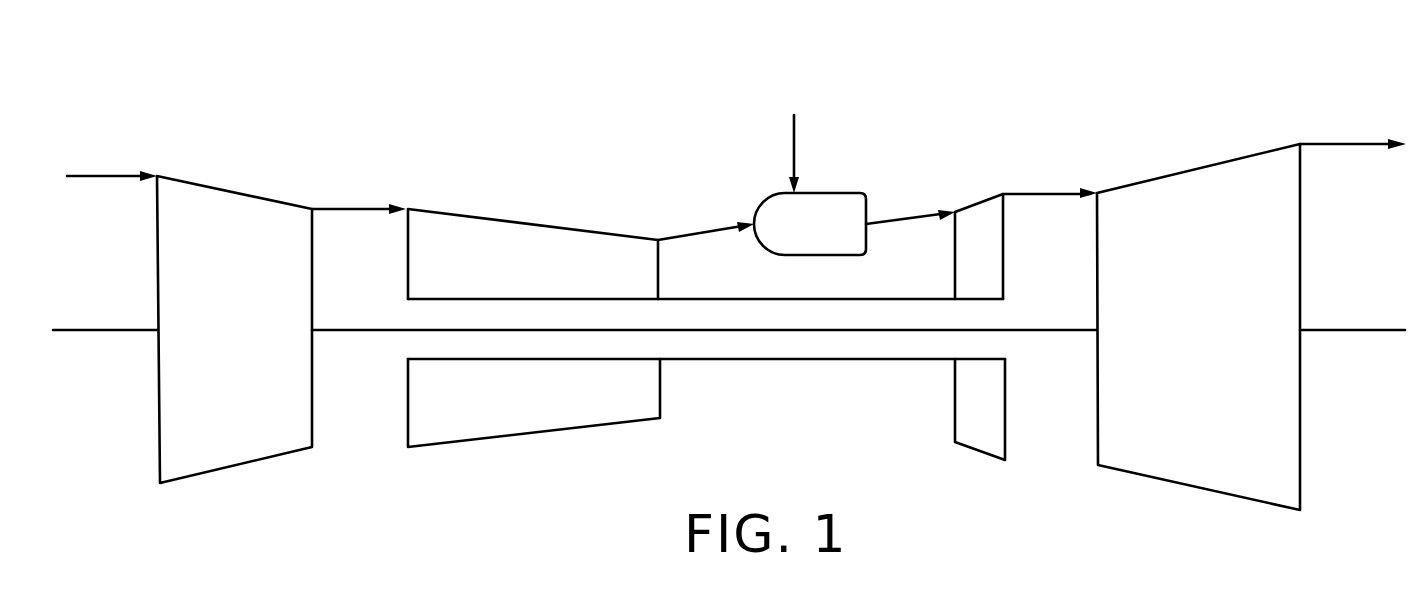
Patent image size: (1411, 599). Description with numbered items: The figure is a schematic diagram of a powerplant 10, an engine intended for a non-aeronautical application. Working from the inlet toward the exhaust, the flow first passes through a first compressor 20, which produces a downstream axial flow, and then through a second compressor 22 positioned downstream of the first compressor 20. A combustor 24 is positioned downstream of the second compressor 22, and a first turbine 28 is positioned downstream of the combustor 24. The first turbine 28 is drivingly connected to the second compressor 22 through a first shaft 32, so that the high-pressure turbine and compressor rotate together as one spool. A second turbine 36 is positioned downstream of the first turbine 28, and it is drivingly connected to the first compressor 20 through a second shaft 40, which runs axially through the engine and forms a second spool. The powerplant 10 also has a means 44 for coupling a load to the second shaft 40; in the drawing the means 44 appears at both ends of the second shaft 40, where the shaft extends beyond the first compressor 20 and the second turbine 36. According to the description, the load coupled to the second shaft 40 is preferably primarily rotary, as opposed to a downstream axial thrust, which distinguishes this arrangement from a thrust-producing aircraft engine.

The powerplant 10 is at (130, 77).
The first compressor 20 is at (243, 453).
The second compressor 22 is at (553, 417).
The combustor 24 is at (802, 217).
The first turbine 28 is at (985, 442).
The first shaft 32 is at (805, 358).
The second turbine 36 is at (1223, 480).
The second shaft 40 is at (1057, 327).
The means for coupling a load 44 is at (125, 332).